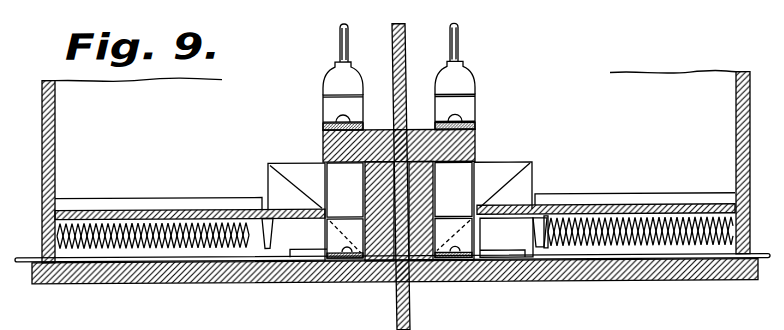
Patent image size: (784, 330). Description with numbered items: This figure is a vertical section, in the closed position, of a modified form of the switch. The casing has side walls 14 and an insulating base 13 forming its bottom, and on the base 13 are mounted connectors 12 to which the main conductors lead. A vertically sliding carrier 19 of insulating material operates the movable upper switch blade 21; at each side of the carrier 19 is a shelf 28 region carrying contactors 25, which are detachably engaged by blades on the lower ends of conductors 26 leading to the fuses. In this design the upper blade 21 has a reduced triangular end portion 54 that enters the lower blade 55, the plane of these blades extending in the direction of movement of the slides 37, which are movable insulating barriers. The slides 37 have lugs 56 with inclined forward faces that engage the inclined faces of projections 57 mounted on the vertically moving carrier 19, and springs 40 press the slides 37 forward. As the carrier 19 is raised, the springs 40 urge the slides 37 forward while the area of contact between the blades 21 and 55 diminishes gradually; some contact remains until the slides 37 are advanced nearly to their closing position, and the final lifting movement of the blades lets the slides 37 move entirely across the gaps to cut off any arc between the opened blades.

The connector 12 is at (570, 259).
The insulating base 13 is at (517, 281).
The side wall 14 is at (736, 110).
The carrier 19 is at (410, 302).
The movable switch blade 21 is at (455, 211).
The contactor 25 is at (471, 111).
The conductor 26 is at (458, 42).
The shelf 28 is at (462, 149).
The movable insulating barrier 37 is at (585, 213).
The spring 40 is at (645, 222).
The reduced triangular end portion 54 is at (482, 238).
The lower blade 55 is at (466, 248).
The lug 56 is at (523, 187).
The projection 57 is at (505, 165).